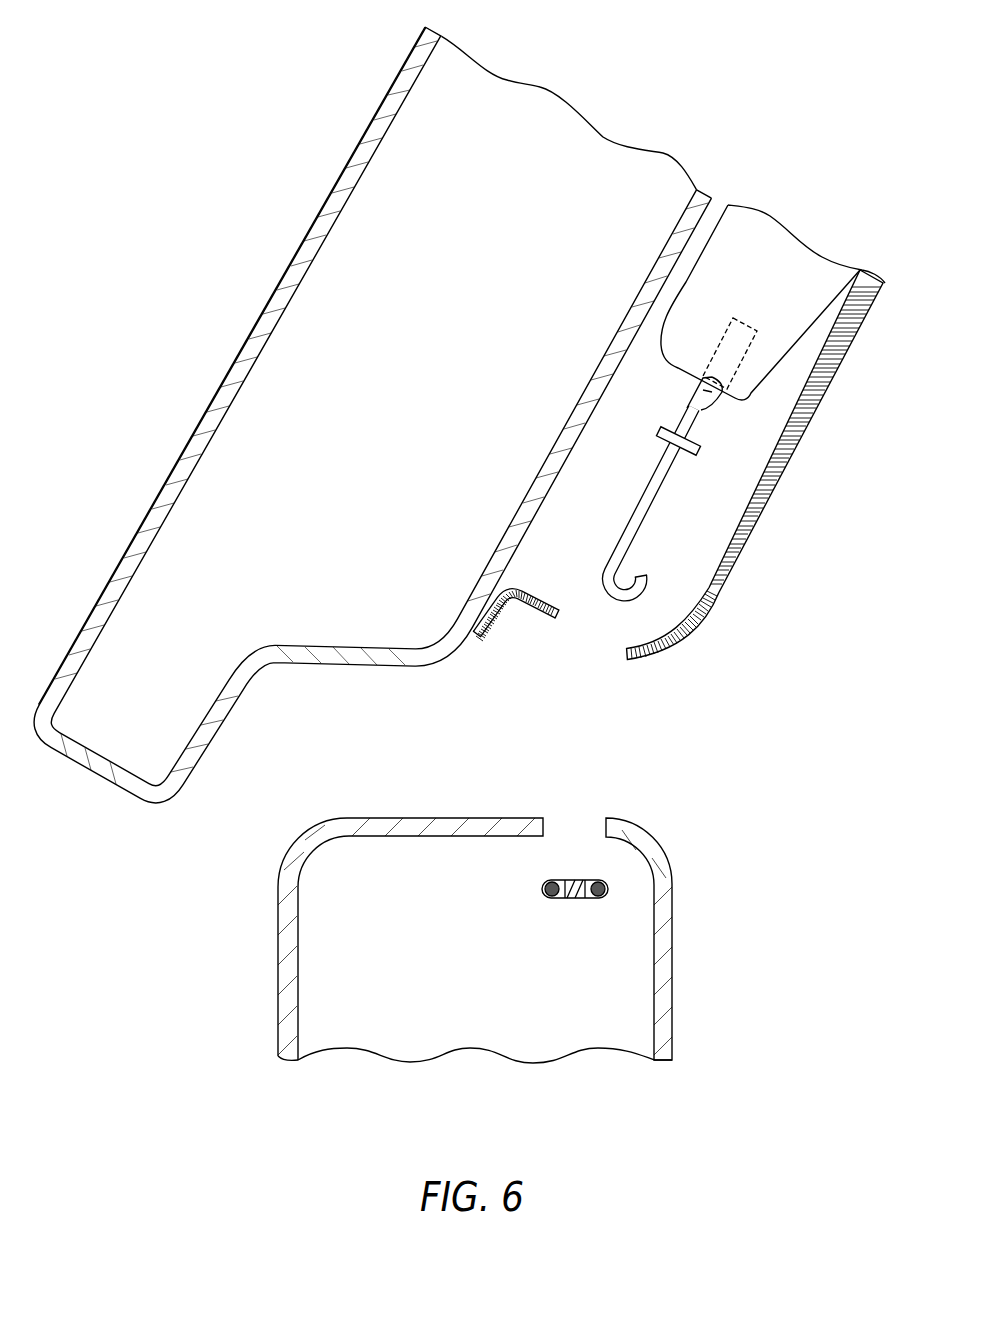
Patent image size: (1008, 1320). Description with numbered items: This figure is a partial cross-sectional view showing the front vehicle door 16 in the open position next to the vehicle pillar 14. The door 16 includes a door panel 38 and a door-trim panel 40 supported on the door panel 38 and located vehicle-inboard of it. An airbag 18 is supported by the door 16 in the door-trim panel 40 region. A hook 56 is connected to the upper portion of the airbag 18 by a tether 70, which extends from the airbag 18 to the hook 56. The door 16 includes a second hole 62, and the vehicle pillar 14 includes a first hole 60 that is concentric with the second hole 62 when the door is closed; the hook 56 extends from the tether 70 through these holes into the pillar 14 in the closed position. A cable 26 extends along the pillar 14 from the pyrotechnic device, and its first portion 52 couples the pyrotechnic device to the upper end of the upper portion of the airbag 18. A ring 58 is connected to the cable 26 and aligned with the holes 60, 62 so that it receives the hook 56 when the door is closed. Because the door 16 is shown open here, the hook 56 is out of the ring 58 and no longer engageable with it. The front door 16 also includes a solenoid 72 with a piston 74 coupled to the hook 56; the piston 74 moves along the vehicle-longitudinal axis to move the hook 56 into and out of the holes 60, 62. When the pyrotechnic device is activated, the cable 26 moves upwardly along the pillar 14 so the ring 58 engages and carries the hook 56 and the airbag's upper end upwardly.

The vehicle pillar 14 is at (678, 936).
The vehicle door 16 is at (322, 104).
The airbag 18 is at (781, 267).
The cable 26 is at (563, 932).
The door panel 38 is at (299, 235).
The door-trim panel 40 is at (770, 492).
The first portion 52 is at (572, 900).
The hook 56 is at (598, 900).
The ring 58 is at (642, 525).
The first hole 60 is at (544, 826).
The second hole 62 is at (560, 617).
The tether 70 is at (708, 412).
The solenoid 72 is at (716, 329).
The piston 74 is at (681, 420).